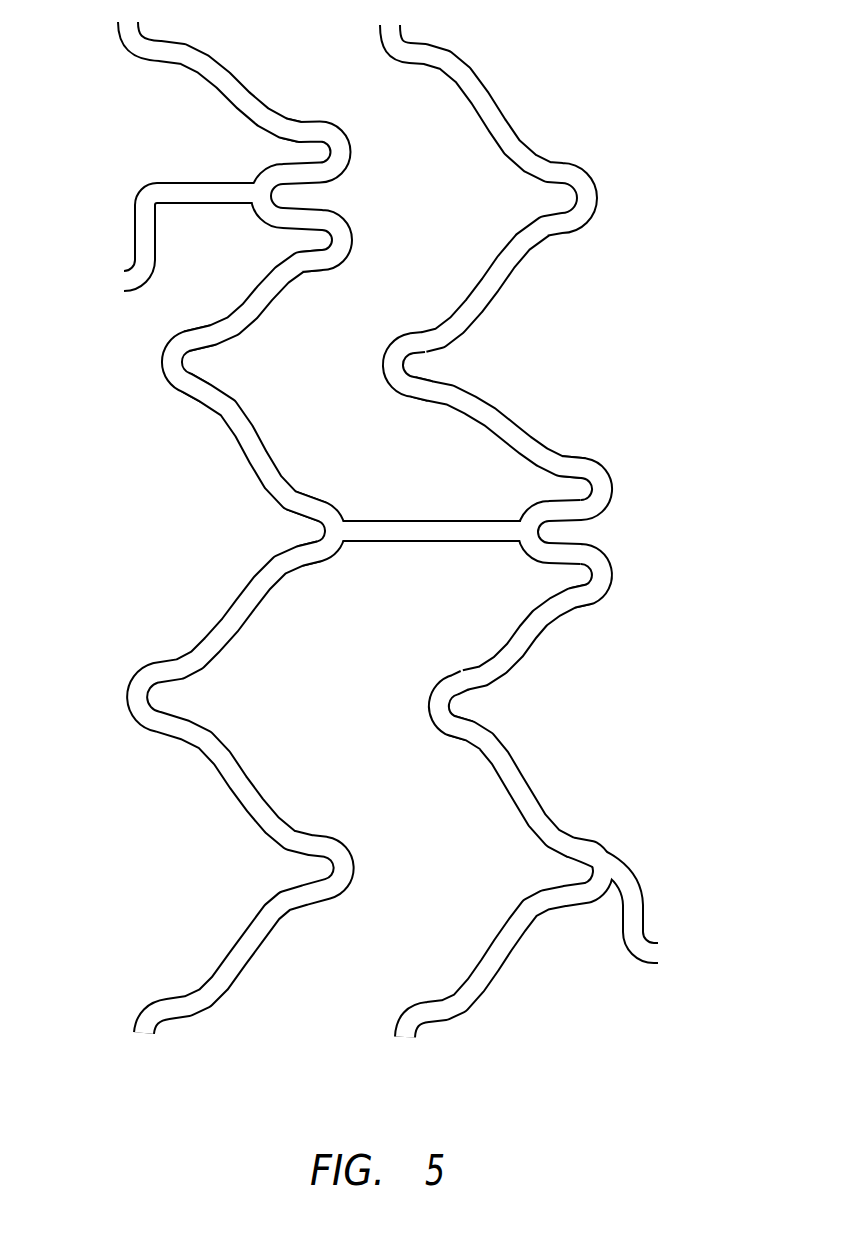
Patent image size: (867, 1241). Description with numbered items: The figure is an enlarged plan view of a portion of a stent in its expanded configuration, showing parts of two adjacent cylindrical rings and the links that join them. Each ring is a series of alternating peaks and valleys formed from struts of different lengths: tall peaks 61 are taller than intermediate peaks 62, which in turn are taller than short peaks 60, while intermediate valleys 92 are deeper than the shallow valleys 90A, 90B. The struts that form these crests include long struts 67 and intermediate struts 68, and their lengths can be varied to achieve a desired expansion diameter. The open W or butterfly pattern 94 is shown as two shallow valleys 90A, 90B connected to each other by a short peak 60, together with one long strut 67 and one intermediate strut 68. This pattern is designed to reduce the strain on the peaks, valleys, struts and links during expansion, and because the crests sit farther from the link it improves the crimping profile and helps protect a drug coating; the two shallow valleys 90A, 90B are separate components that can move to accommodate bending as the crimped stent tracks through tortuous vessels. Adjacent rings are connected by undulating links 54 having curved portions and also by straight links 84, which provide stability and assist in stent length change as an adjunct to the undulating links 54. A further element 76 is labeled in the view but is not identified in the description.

The undulating link 54 is at (157, 237).
The short peak 60 is at (541, 531).
The tall peak 61 is at (386, 362).
The intermediate peak 62 is at (188, 337).
The long strut 67 is at (522, 246).
The intermediate strut 68 is at (511, 643).
The connecting bar 76 is at (240, 185).
The straight link 84 is at (405, 527).
The shallow valley 90A is at (592, 574).
The shallow valley 90B is at (592, 488).
The intermediate valley 92 is at (322, 530).
The open W butterfly pattern 94 is at (348, 103).